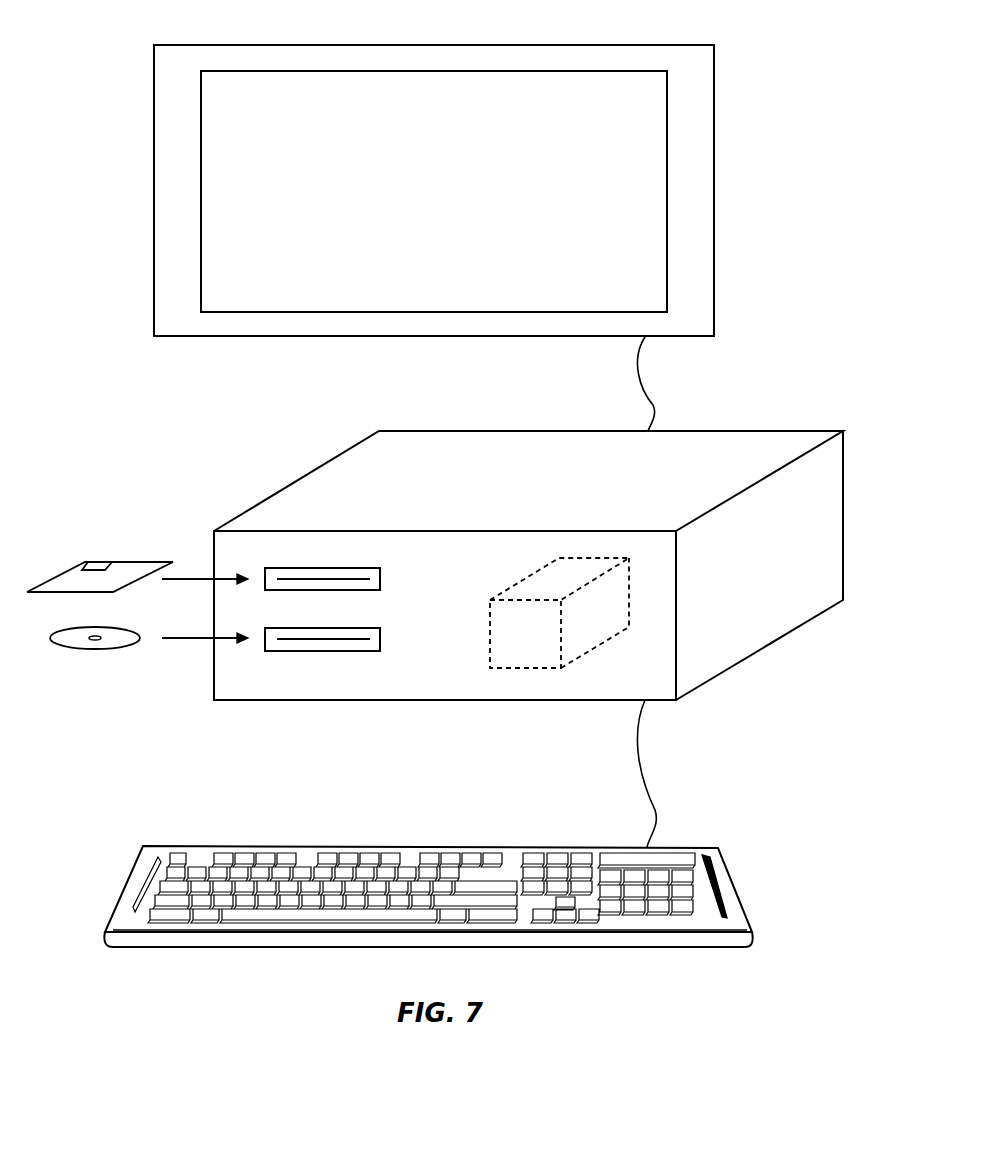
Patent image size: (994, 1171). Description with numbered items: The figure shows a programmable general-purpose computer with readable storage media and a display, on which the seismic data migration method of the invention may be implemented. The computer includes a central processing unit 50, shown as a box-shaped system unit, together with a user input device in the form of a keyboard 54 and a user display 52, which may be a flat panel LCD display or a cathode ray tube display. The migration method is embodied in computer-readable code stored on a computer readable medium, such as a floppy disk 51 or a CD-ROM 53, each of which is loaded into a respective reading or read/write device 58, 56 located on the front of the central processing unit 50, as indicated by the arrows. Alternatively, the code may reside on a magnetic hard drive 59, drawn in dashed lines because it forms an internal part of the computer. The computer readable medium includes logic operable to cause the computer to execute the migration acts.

The central processing unit 50 is at (772, 431).
The floppy disk 51 is at (130, 562).
The user display 52 is at (652, 46).
The CD-ROM 53 is at (128, 627).
The keyboard 54 is at (742, 892).
The read/write device 56 is at (351, 628).
The reading device 58 is at (351, 568).
The magnetic hard drive 59 is at (489, 606).